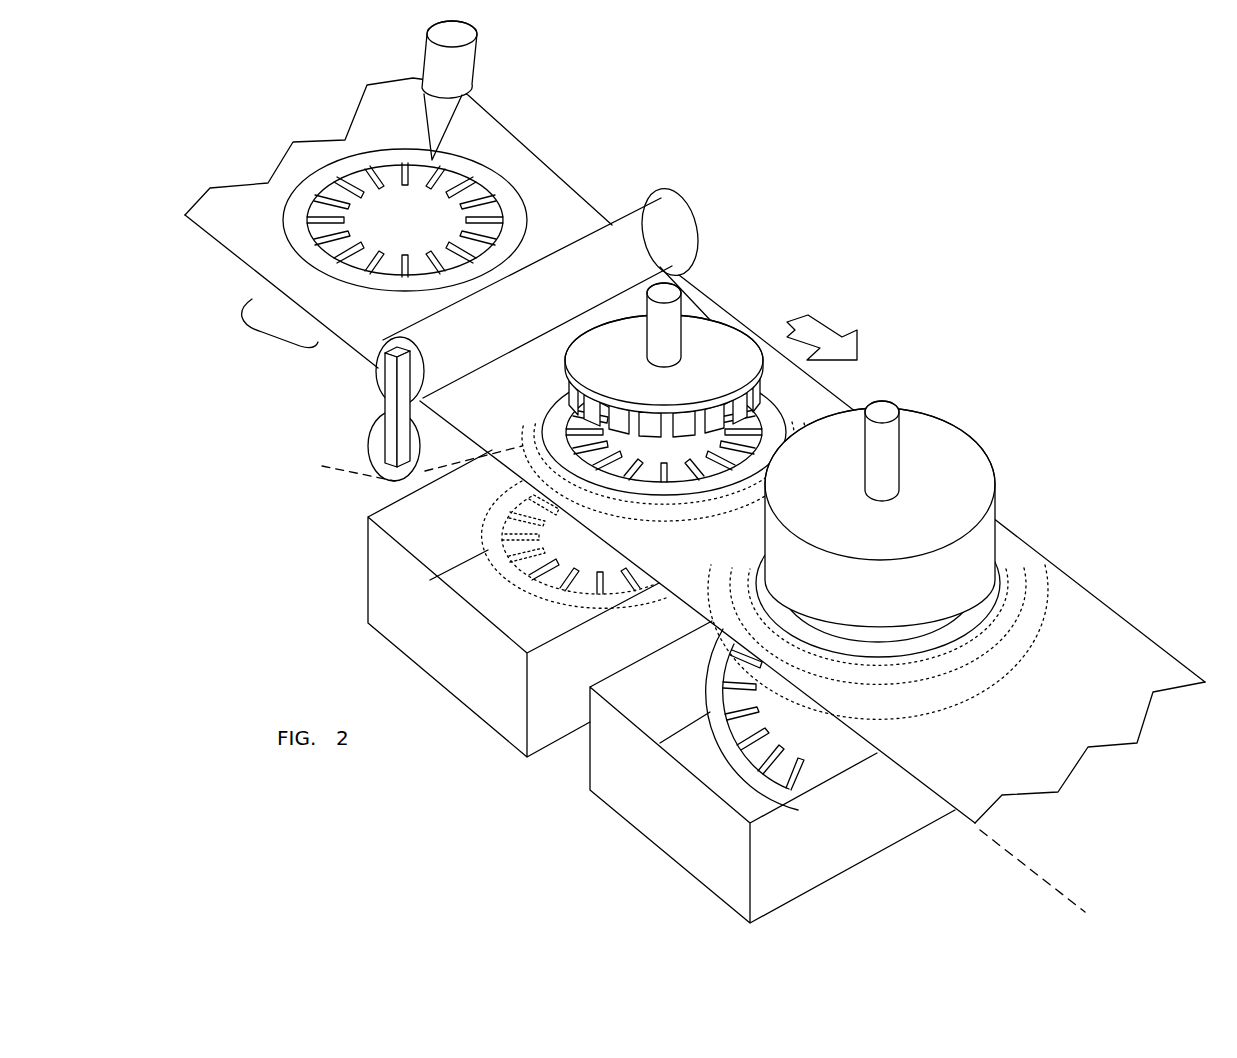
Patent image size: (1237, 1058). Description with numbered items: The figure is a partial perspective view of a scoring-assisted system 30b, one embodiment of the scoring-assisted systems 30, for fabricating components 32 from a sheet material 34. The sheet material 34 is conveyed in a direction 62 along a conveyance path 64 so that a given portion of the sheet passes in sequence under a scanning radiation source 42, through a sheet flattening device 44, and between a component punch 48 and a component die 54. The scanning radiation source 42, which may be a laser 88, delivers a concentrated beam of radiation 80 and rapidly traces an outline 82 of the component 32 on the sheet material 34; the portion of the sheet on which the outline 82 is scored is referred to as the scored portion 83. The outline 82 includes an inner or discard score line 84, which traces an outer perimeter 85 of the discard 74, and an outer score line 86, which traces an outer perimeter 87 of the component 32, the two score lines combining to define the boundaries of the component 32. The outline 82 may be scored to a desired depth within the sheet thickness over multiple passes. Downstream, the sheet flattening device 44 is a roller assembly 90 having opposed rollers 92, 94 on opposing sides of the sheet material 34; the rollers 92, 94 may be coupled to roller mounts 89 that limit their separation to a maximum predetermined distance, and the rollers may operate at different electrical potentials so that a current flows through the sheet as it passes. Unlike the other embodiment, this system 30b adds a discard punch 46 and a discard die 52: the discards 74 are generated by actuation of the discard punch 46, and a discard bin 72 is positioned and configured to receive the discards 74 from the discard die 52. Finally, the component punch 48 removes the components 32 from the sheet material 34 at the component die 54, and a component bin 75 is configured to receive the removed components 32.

The scoring-assisted system 30 is at (367, 216).
The scoring-assisted system 30b is at (367, 216).
The sheet material 34 is at (202, 213).
The scanning radiation source 42 is at (501, 59).
The laser 88 is at (480, 58).
The concentrated beam of radiation 80 is at (443, 110).
The outline 82 is at (462, 204).
The inner or discard score line 84 is at (462, 204).
The outer perimeter of the discard 85 is at (462, 204).
The outer score line 86 is at (462, 204).
The outer perimeter of the component 87 is at (493, 162).
The sheet flattening device 44 is at (573, 262).
The roller assembly 90 is at (664, 195).
The discard punch 46 is at (714, 322).
The direction 62 is at (820, 326).
The component punch 48 is at (965, 430).
The roller 92 is at (375, 386).
The roller 94 is at (372, 430).
The roller mounts 89 is at (343, 454).
The scored portion 83 is at (266, 328).
The discard die 52 is at (406, 463).
The discards 74 is at (553, 538).
The discard bin 72 is at (368, 621).
The component bin 75 is at (592, 790).
The components 32 is at (782, 810).
The component die 54 is at (1075, 572).
The conveyance path 64 is at (1150, 783).